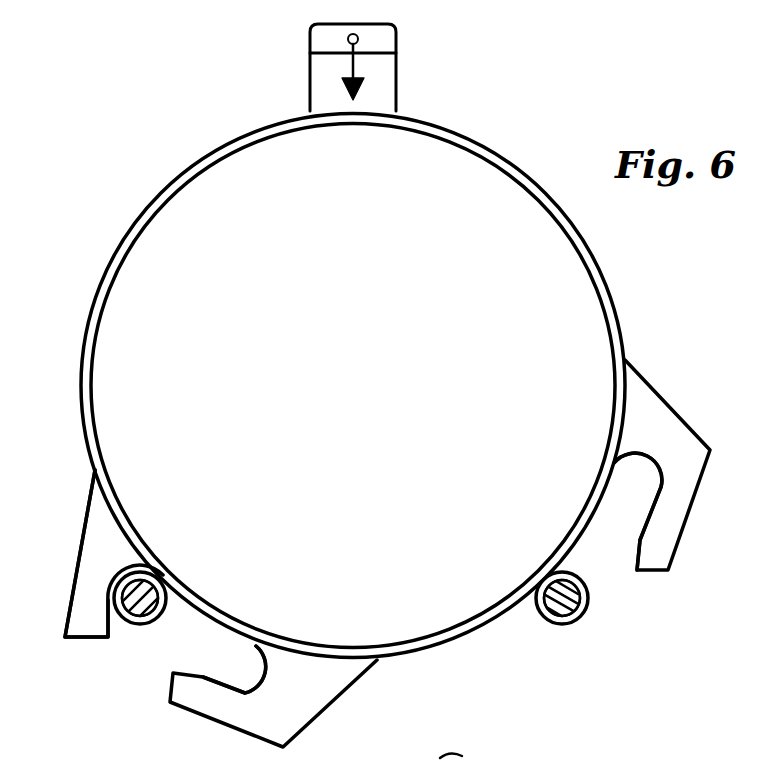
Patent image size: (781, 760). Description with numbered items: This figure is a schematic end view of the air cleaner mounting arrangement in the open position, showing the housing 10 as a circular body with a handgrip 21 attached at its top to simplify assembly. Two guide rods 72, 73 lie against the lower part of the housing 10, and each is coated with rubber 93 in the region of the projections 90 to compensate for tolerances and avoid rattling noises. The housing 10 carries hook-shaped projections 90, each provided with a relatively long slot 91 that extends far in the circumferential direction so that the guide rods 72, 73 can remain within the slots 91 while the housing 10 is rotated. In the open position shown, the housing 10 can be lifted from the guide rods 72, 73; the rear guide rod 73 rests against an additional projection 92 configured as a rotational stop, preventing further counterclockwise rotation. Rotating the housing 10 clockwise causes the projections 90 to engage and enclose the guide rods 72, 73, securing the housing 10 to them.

The housing 10 is at (495, 142).
The handgrip 21 is at (385, 72).
The guide rod 72 is at (588, 590).
The rear guide rod 73 is at (128, 622).
The projections 90 is at (660, 410).
The slots 91 is at (648, 477).
The additional projection 92 is at (82, 595).
The rubber 93 is at (150, 622).